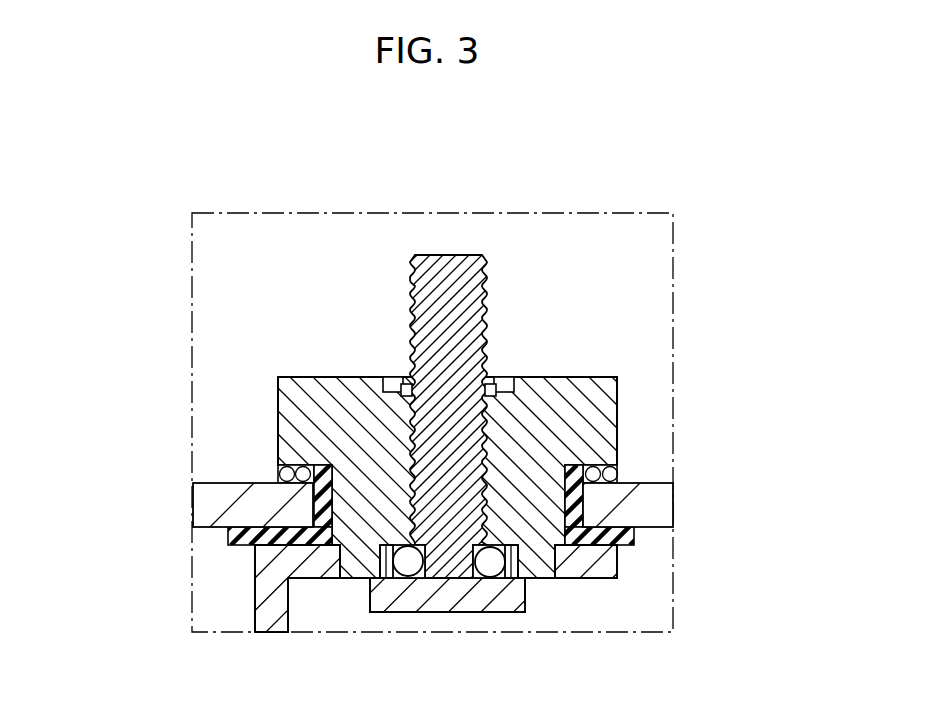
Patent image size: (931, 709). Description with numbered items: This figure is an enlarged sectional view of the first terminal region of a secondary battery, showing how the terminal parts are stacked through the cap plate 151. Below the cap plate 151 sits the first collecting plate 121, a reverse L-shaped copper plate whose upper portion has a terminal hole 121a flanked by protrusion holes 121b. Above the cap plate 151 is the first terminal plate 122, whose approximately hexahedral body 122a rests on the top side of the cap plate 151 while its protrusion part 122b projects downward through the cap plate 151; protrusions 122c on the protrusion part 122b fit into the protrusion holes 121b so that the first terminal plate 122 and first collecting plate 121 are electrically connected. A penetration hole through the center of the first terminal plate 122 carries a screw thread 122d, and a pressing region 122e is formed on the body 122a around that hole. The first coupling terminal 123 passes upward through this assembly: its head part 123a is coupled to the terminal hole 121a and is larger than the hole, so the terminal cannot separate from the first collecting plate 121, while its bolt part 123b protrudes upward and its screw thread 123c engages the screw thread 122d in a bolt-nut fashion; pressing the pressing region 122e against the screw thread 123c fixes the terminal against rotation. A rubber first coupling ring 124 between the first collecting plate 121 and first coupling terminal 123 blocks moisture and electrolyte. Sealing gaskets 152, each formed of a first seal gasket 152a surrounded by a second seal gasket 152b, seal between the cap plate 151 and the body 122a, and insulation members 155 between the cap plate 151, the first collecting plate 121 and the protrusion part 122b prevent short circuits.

The first collecting plate 121 is at (424, 620).
The terminal hole 121a is at (477, 584).
The protrusion holes 121b is at (553, 563).
The first terminal plate 122 is at (410, 331).
The body 122a is at (300, 432).
The protrusion part 122b is at (332, 494).
The protrusions 122c is at (340, 560).
The screw thread 122d is at (413, 395).
The pressing region 122e is at (403, 377).
The first coupling terminal 123 is at (450, 331).
The head part 123a is at (525, 577).
The bolt part 123b is at (443, 210).
The screw thread 123c is at (487, 300).
The first coupling ring 124 is at (406, 567).
The cap plate 151 is at (653, 509).
The sealing gaskets 152 is at (703, 486).
The first seal gasket 152a is at (589, 468).
The second seal gasket 152b is at (616, 473).
The insulation members 155 is at (245, 540).